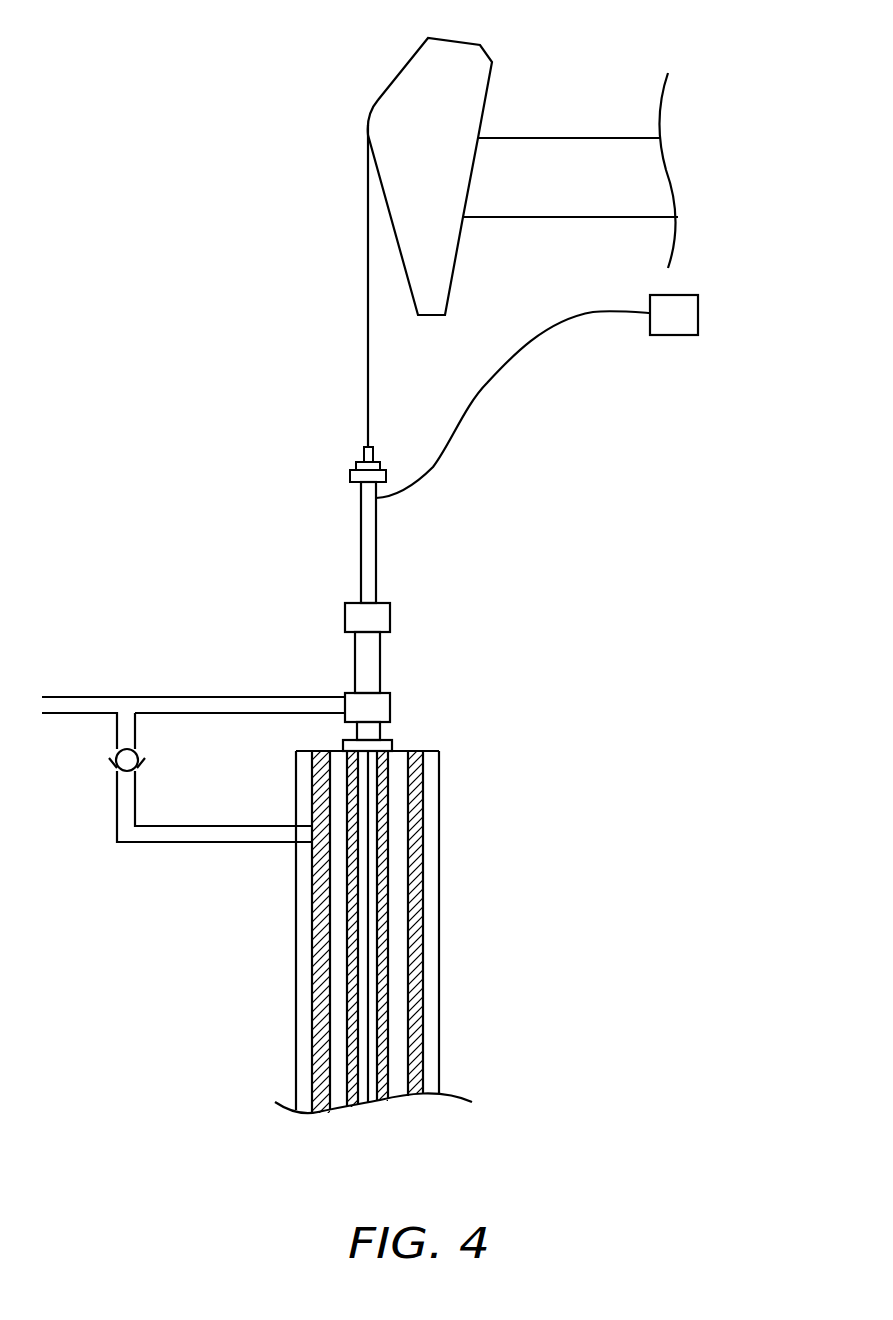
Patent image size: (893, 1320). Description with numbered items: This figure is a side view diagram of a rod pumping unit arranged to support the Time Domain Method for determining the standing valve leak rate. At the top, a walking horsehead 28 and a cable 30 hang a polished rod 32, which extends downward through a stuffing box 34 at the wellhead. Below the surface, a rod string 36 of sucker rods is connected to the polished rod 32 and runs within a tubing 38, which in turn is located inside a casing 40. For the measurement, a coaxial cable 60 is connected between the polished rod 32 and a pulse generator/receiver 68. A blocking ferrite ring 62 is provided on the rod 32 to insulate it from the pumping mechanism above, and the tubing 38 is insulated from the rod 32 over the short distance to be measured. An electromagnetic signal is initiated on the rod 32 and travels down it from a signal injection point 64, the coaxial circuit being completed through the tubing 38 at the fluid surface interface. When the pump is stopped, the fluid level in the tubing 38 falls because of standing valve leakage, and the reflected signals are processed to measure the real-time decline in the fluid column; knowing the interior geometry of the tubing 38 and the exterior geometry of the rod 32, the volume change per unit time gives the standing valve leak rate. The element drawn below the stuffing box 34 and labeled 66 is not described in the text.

The walking horsehead 28 is at (368, 122).
The cable 30 is at (367, 352).
The polished rod 32 is at (377, 547).
The stuffing box 34 is at (392, 617).
The rod string 36 is at (368, 960).
The tubing 38 is at (383, 895).
The casing 40 is at (418, 850).
The coaxial cable 60 is at (487, 387).
The blocking ferrite ring 62 is at (350, 475).
The signal injection point 64 is at (350, 499).
The stuffing box 66 is at (392, 710).
The pulse generator/receiver 68 is at (702, 317).